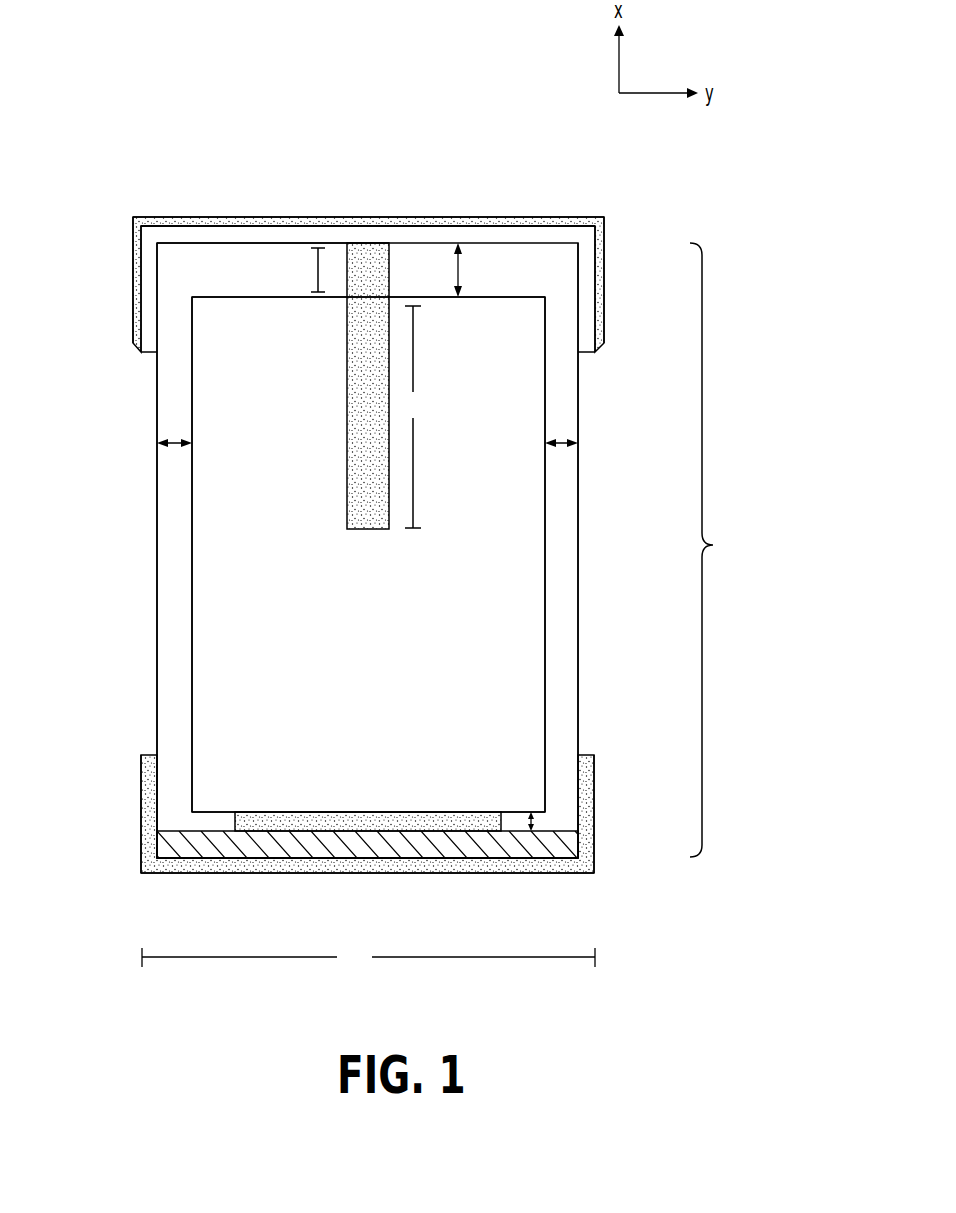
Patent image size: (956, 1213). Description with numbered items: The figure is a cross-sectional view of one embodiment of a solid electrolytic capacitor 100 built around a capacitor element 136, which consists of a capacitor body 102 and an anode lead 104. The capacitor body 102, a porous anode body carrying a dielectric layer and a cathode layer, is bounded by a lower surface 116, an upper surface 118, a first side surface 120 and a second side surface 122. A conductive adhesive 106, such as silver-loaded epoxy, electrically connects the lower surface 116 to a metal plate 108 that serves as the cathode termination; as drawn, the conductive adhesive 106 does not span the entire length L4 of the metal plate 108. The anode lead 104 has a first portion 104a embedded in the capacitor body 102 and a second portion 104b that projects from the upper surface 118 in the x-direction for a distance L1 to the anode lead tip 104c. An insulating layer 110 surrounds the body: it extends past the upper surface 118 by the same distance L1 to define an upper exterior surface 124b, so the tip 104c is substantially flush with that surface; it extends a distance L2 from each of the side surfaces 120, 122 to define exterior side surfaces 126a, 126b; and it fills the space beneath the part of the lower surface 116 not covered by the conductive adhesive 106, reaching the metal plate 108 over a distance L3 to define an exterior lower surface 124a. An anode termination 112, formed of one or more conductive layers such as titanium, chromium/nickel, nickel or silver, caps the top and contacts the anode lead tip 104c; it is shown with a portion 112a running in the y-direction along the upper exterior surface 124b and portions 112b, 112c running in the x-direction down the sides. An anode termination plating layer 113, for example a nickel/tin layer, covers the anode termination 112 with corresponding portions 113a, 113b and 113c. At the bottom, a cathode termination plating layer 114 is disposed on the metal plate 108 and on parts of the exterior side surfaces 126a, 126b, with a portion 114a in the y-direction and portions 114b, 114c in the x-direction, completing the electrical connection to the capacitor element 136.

The solid electrolytic capacitor 100 is at (166, 142).
The capacitor body 102 is at (372, 628).
The anode lead 104 is at (373, 256).
The first portion of anode lead 104a is at (415, 417).
The second portion of anode lead 104b is at (297, 270).
The anode lead tip 104c is at (357, 243).
The conductive adhesive 106 is at (248, 818).
The metal plate 108 is at (180, 843).
The insulating layer 110 is at (562, 625).
The anode termination 112 is at (552, 231).
The first portion of anode termination 112a is at (480, 228).
The second portion of anode termination 112b is at (150, 288).
The third portion of anode termination 112c is at (585, 270).
The anode termination plating layer 113 is at (217, 224).
The first portion of anode termination plating layer 113a is at (290, 224).
The second portion of anode termination plating layer 113b is at (137, 258).
The third portion of anode termination plating layer 113c is at (602, 246).
The cathode termination plating layer 114 is at (500, 865).
The first portion of cathode termination plating layer 114a is at (325, 875).
The second portion of cathode termination plating layer 114b is at (145, 865).
The third portion of cathode termination plating layer 114c is at (597, 850).
The lower surface 116 is at (217, 812).
The upper surface 118 is at (233, 297).
The first side surface 120 is at (192, 560).
The second side surface 122 is at (545, 547).
The exterior lower surface 124a is at (205, 832).
The upper exterior surface 124b is at (167, 228).
The exterior side surface 126a is at (157, 491).
The exterior side surface 126b is at (578, 398).
The capacitor element 136 is at (719, 550).
The distance L1 is at (471, 270).
The distance L2 is at (367, 457).
The distance L3 is at (548, 822).
The length L4 is at (368, 957).